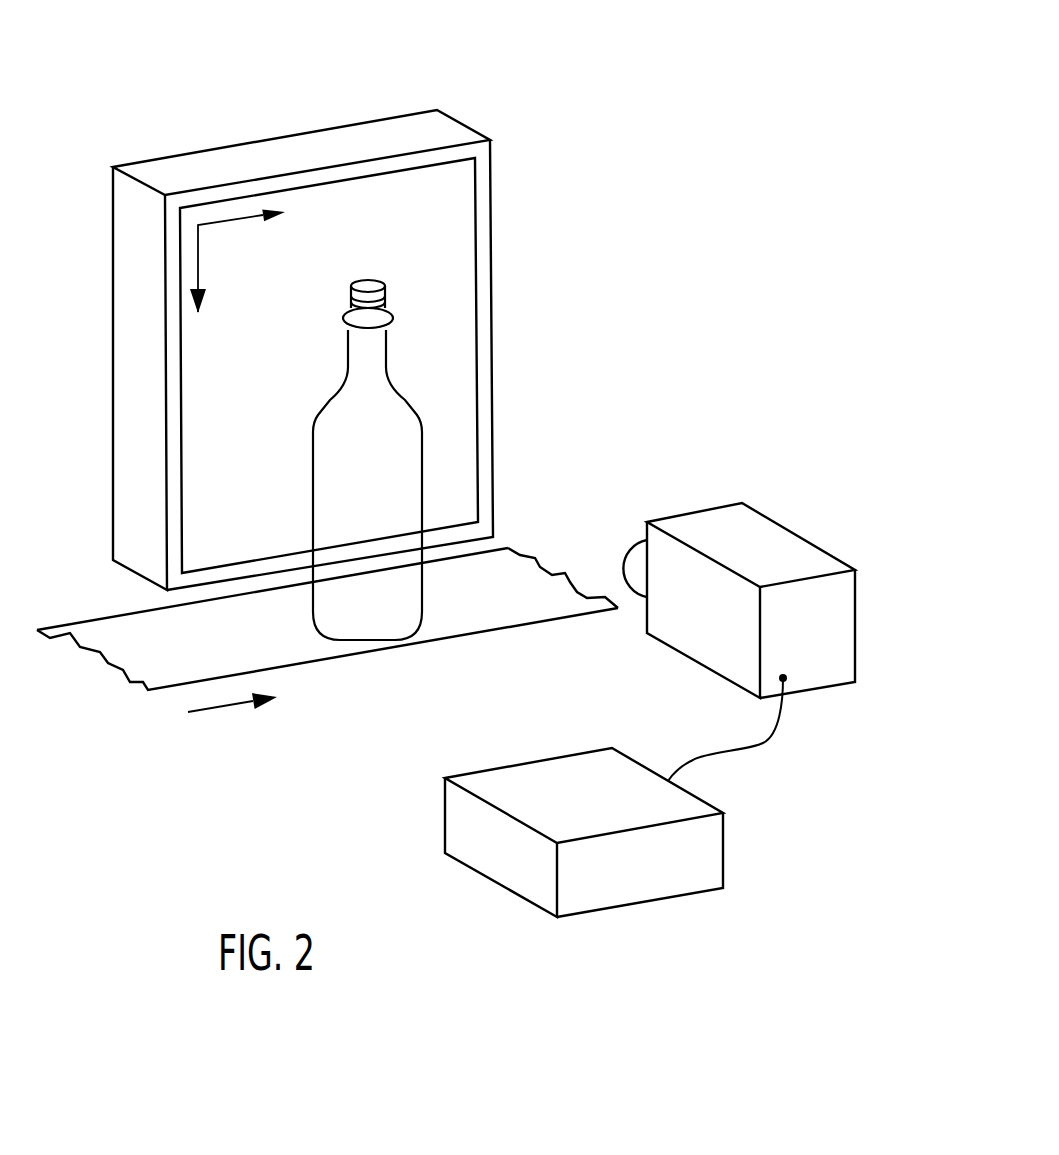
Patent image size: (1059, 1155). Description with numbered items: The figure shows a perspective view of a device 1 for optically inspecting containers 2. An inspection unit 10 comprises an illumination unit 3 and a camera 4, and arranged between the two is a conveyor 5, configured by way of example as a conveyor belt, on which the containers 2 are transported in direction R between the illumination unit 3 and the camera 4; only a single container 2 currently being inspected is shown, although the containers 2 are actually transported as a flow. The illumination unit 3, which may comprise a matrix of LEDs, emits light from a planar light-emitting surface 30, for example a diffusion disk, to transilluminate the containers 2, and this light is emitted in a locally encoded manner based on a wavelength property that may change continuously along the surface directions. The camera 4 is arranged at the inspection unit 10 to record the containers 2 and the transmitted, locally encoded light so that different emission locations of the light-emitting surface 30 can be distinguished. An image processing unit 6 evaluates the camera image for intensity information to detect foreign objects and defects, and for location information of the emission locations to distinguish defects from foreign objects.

The device for optically inspecting containers 1 is at (690, 56).
The inspection unit 10 is at (485, 66).
The container 2 is at (377, 487).
The illumination unit 3 is at (492, 322).
The light-emitting surface 30 is at (460, 253).
The camera 4 is at (760, 532).
The conveyor 5 is at (305, 650).
The image processing unit 6 is at (565, 770).